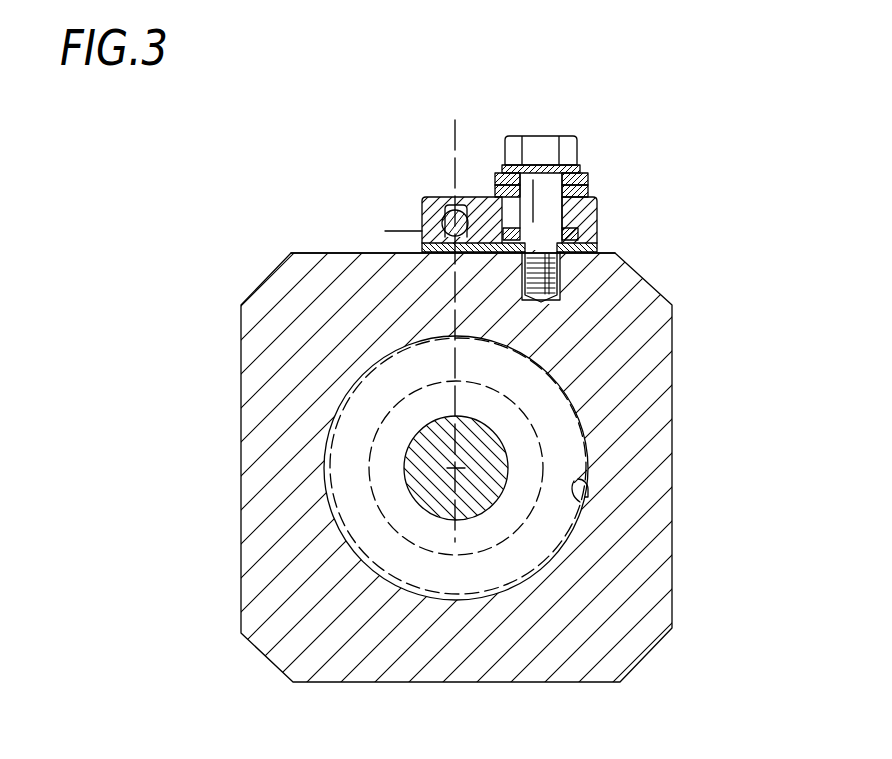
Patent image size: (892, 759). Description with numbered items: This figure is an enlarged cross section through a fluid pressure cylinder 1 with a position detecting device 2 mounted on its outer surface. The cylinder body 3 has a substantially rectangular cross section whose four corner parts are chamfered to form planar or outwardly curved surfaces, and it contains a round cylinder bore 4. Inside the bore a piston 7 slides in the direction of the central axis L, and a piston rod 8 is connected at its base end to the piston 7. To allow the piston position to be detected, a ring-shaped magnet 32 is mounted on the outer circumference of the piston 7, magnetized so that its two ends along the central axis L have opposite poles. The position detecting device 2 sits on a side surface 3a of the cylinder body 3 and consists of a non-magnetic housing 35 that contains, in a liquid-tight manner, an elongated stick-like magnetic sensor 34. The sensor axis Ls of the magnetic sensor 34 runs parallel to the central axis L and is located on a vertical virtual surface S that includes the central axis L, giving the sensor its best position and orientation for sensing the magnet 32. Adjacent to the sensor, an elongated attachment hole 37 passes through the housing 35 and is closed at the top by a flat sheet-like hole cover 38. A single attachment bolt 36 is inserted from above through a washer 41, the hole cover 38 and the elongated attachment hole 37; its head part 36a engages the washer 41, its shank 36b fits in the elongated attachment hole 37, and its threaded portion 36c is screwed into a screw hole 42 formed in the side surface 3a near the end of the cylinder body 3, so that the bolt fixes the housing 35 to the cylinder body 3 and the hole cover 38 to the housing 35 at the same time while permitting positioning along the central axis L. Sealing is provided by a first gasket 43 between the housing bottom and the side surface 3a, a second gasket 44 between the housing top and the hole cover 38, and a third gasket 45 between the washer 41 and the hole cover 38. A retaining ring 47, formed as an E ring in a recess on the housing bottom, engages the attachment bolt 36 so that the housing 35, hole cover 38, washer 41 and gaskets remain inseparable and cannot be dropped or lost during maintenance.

The fluid pressure cylinder 1 is at (728, 408).
The position detecting device 2 is at (649, 108).
The cylinder body 3 is at (627, 449).
The side surface 3a is at (317, 252).
The cylinder bore 4 is at (580, 507).
The piston 7 is at (343, 457).
The piston rod 8 is at (433, 465).
The magnet 32 is at (337, 410).
The magnetic sensor 34 is at (452, 197).
The housing 35 is at (433, 217).
The attachment bolt 36 is at (557, 118).
The head part 36a is at (533, 143).
The shank 36b is at (547, 207).
The threaded portion 36c is at (556, 262).
The elongated attachment hole 37 is at (516, 178).
The hole cover 38 is at (587, 178).
The washer 41 is at (567, 166).
The screw hole 42 is at (547, 300).
The first gasket 43 is at (600, 247).
The second gasket 44 is at (590, 193).
The third gasket 45 is at (583, 172).
The retaining ring 47 is at (598, 237).
The central axis L is at (418, 504).
The sensor axis Ls is at (385, 229).
The virtual surface S is at (456, 314).